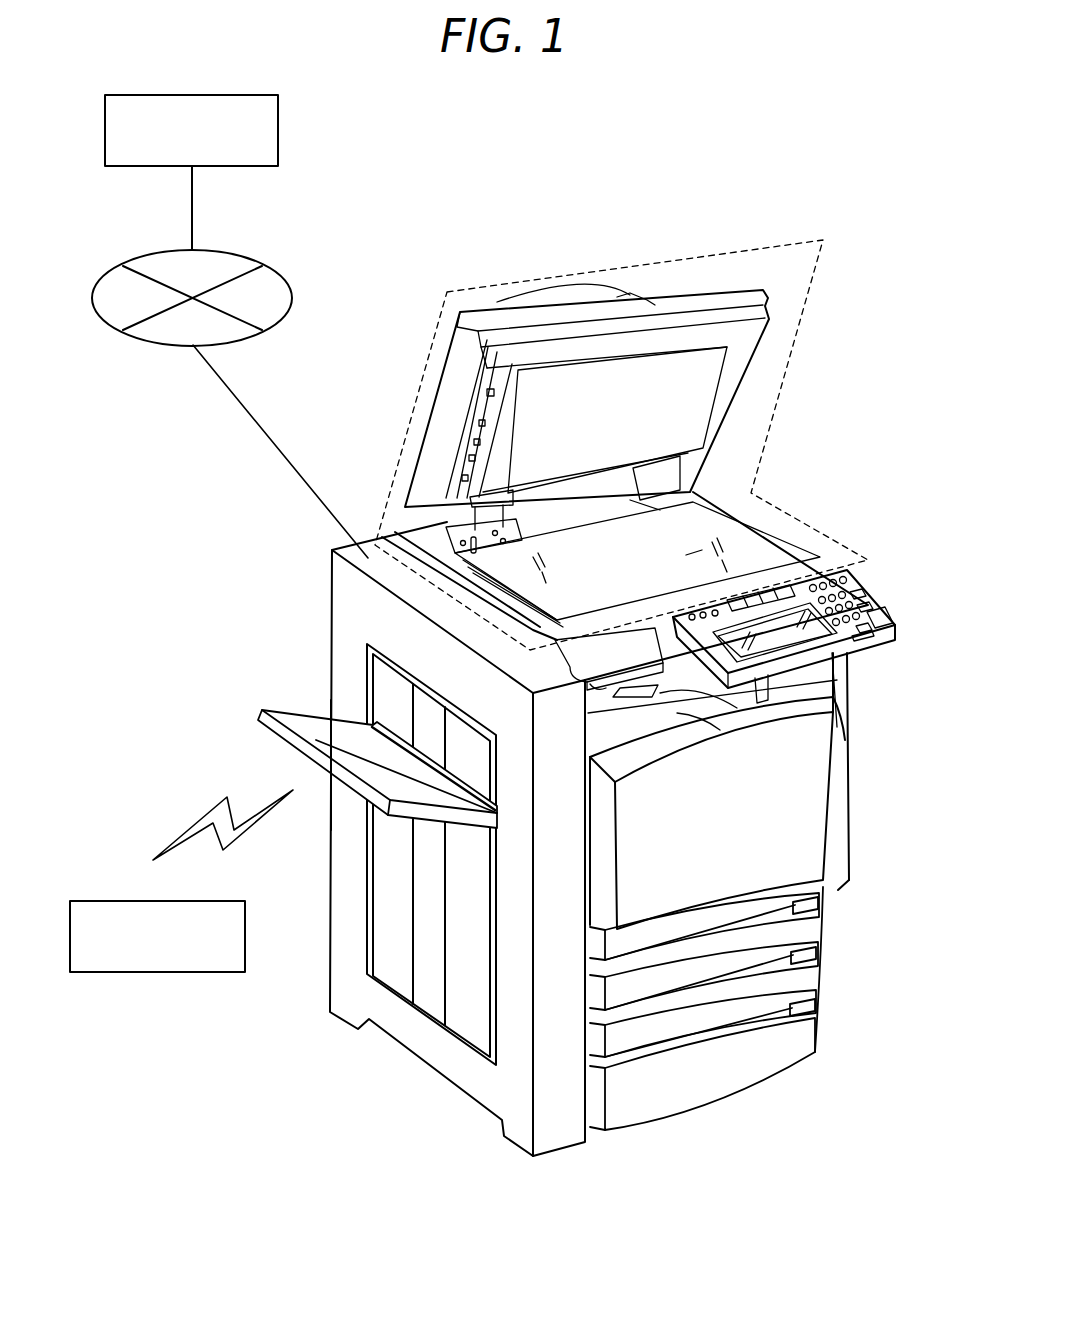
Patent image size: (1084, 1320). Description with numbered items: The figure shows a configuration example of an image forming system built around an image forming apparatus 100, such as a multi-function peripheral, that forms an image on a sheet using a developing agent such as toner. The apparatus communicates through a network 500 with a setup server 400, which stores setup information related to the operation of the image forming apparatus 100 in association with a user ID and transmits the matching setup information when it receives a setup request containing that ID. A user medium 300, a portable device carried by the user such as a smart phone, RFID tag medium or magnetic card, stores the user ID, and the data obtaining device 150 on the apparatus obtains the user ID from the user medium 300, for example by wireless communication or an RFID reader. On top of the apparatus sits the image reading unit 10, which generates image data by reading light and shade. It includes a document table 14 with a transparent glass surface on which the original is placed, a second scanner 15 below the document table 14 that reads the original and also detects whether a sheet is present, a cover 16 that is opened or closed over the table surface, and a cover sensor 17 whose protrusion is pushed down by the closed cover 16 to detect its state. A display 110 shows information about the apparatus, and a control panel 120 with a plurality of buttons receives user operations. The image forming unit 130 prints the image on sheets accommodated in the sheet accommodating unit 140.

The image forming apparatus 100 is at (662, 203).
The image reading unit 10 is at (773, 243).
The document table 14 is at (653, 563).
The second scanner 15 is at (690, 562).
The cover 16 is at (562, 423).
The cover sensor 17 is at (470, 537).
The display 110 is at (798, 612).
The control panel 120 is at (877, 612).
The image forming unit 130 is at (812, 835).
The sheet accommodating unit 140 is at (836, 890).
The data obtaining device 150 is at (620, 657).
The user medium 300 is at (185, 900).
The setup server 400 is at (218, 96).
The network 500 is at (217, 253).